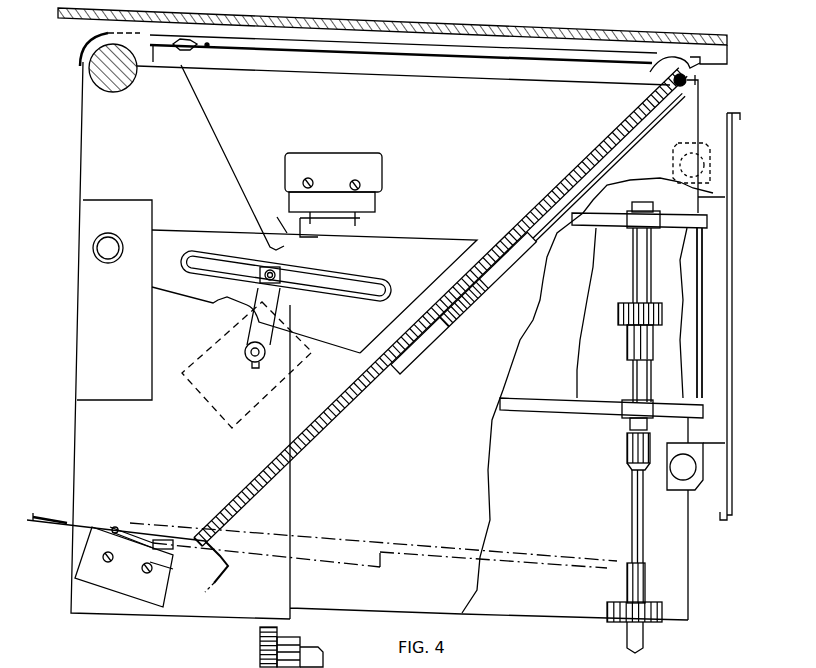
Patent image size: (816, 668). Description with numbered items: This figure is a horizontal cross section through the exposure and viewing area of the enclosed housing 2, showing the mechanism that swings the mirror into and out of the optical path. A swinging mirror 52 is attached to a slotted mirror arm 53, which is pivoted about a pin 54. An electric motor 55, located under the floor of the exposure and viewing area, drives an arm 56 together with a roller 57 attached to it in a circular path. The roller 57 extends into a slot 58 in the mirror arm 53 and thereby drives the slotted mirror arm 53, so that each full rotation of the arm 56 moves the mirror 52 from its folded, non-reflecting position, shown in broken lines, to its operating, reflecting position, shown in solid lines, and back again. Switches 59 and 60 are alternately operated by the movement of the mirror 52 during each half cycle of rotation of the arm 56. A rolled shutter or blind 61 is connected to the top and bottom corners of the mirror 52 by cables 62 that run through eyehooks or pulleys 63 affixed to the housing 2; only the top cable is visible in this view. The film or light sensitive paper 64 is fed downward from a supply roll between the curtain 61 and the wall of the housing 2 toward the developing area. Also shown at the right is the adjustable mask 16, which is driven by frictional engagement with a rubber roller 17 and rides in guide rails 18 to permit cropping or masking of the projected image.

The enclosed housing 2 is at (483, 33).
The adjustable mask 16 is at (692, 357).
The rubber roller 17 is at (655, 315).
The guide rails 18 is at (707, 219).
The swinging mirror 52 is at (340, 406).
The slotted mirror arm 53 is at (412, 243).
The pin 54 is at (104, 245).
The electric motor 55 is at (208, 343).
The arm 56 is at (268, 246).
The roller 57 is at (266, 270).
The slot 58 is at (347, 287).
The switch 59 is at (103, 577).
The switch 60 is at (344, 160).
The rolled shutter or blind 61 is at (137, 71).
The cables 62 is at (418, 57).
The eyehooks or pulleys 63 is at (652, 72).
The film or light sensitive paper 64 is at (340, 40).